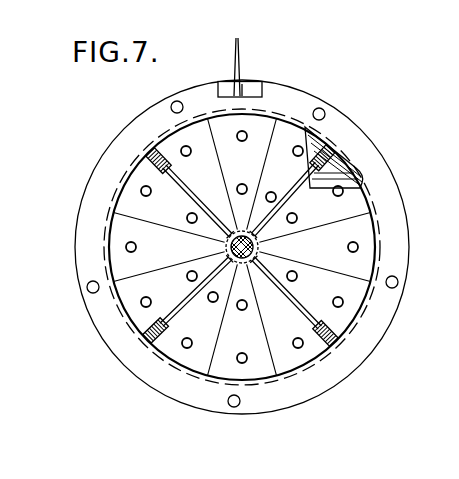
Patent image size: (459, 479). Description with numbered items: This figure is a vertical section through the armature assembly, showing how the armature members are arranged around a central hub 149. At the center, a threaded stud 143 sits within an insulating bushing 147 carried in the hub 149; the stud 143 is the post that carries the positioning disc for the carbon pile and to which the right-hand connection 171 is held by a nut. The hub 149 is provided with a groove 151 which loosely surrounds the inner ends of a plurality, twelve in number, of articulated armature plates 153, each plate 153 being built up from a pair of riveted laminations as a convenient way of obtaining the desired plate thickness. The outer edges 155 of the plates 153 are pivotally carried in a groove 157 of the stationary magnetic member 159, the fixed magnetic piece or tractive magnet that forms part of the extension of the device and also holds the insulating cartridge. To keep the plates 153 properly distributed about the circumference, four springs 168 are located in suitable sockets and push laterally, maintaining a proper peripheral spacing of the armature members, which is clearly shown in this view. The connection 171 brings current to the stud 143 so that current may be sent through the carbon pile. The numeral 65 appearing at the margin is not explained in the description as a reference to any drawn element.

The threaded stud 143 is at (275, 247).
The insulating bushing 147 is at (286, 293).
The hub 149 is at (211, 247).
The groove 151 is at (198, 200).
The articulated armature plate 153 is at (242, 242).
The outer edge 155 is at (224, 247).
The groove 157 is at (211, 247).
The stationary magnetic member 159 is at (242, 262).
The spring 168 is at (246, 246).
The connection 171 is at (259, 67).
The adjacent reference 65 is at (458, 462).